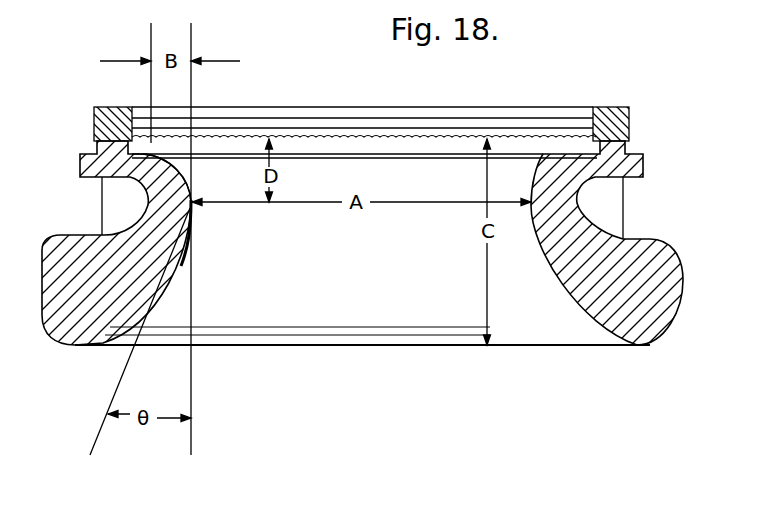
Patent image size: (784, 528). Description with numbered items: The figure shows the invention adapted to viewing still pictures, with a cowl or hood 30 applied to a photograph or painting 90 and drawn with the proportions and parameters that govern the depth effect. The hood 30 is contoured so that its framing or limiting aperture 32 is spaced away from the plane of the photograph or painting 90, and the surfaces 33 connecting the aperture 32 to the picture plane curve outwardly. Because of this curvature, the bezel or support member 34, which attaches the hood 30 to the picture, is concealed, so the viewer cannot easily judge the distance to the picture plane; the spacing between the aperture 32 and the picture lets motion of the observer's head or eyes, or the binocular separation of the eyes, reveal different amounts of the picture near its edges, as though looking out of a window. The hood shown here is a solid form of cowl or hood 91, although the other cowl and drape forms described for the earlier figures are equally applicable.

The hood 30 is at (383, 244).
The framing aperture 32 is at (193, 212).
The surfaces 33 is at (190, 183).
The bezel or support member 34 is at (137, 133).
The photograph or painting 90 is at (388, 140).
The cowl or hood 91 is at (592, 282).